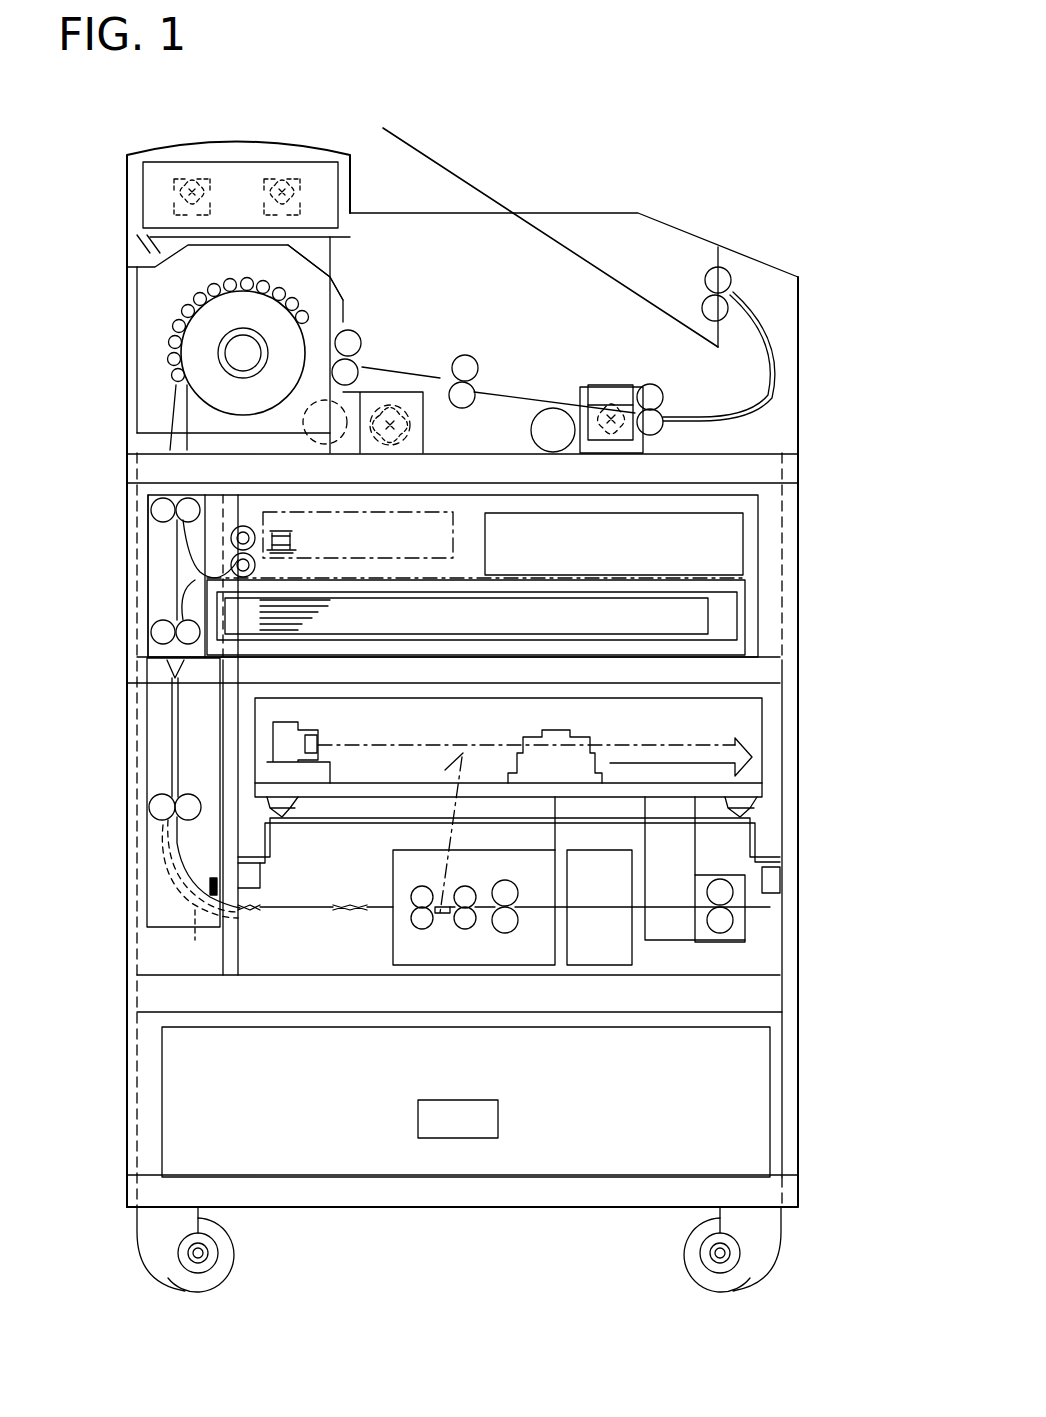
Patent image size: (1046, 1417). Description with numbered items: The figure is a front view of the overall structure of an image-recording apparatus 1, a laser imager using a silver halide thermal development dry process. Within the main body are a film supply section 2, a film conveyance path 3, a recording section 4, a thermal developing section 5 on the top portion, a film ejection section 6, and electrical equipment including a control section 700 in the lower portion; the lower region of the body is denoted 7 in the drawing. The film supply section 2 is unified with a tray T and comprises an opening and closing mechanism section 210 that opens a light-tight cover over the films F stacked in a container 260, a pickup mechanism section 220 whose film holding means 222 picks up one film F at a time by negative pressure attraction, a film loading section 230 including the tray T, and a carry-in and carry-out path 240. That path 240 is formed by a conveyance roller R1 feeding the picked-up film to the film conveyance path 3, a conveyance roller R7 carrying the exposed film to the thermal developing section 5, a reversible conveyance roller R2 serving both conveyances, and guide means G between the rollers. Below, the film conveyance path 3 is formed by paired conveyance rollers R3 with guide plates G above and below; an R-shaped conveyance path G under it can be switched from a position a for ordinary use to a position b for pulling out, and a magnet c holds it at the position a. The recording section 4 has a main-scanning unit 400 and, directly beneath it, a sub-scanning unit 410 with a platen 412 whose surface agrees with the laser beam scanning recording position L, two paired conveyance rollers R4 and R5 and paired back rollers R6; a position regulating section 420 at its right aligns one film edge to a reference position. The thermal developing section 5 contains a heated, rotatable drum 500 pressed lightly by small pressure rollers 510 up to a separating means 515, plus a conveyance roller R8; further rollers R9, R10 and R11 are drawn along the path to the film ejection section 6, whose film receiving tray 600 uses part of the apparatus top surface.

The image-recording apparatus 1 is at (433, 1218).
The film supply section 2 is at (752, 568).
The film conveyance path 3 is at (165, 768).
The recording section 4 is at (788, 805).
The thermal developing section 5 is at (118, 285).
The film ejection section 6 is at (596, 200).
The base unit 7 is at (778, 1053).
The drum 500 is at (266, 399).
The pressure roller 510 is at (292, 297).
The separating means 515 is at (330, 345).
The film receiving tray 600 is at (455, 175).
The control section 700 is at (480, 1134).
The opening and closing mechanism section 210 is at (620, 510).
The pickup mechanism section 220 is at (455, 510).
The film holding means 222 is at (297, 540).
The film loading section 230 is at (578, 578).
The carry-in and carry-out path 240 is at (158, 558).
The container 260 is at (712, 612).
The main-scanning unit 400 is at (505, 690).
The sub-scanning unit 410 is at (385, 932).
The platen 412 is at (440, 915).
The position regulating section 420 is at (640, 866).
The conveyance roller R1 is at (243, 526).
The conveyance roller R2 is at (152, 640).
The paired conveyance rollers R3 is at (183, 823).
The paired conveyance rollers R4 is at (422, 930).
The paired conveyance rollers R5 is at (465, 930).
The paired back rollers R6 is at (505, 934).
The conveyance roller R7 is at (152, 507).
The conveyance roller R8 is at (362, 344).
The roller pair R9 is at (466, 354).
The roller pair R10 is at (648, 384).
The roller pair R11 is at (733, 280).
The guide means G is at (178, 418).
The sheet film F is at (310, 598).
The tray T is at (745, 617).
The laser beam scanning recording position L is at (442, 907).
The position for ordinary use a is at (206, 872).
The position for pulling out b is at (196, 871).
The magnet c is at (194, 939).